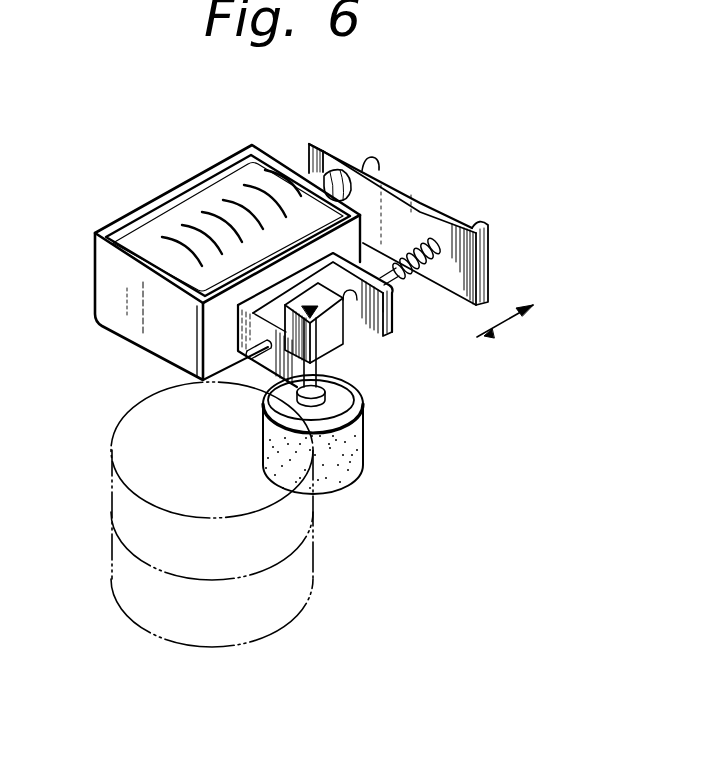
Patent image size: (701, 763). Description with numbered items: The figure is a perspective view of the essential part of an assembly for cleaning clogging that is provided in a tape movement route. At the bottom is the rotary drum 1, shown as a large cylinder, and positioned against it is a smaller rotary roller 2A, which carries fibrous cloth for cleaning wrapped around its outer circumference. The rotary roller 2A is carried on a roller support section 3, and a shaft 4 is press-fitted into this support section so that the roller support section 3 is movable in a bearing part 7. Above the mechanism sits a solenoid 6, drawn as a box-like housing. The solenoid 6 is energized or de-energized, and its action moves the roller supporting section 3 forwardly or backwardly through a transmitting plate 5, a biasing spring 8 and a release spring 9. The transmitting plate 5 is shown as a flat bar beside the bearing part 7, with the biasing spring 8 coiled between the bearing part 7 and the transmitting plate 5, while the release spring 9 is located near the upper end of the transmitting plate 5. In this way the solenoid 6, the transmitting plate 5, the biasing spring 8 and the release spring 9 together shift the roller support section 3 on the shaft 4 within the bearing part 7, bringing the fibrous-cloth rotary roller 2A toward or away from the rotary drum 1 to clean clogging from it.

The rotary drum 1 is at (112, 446).
The rotary roller 2A is at (357, 437).
The roller support section 3 is at (347, 305).
The shaft 4 is at (376, 312).
The transmitting plate 5 is at (490, 272).
The solenoid 6 is at (219, 187).
The bearing part 7 is at (240, 326).
The biasing spring 8 is at (433, 238).
The release spring 9 is at (350, 160).